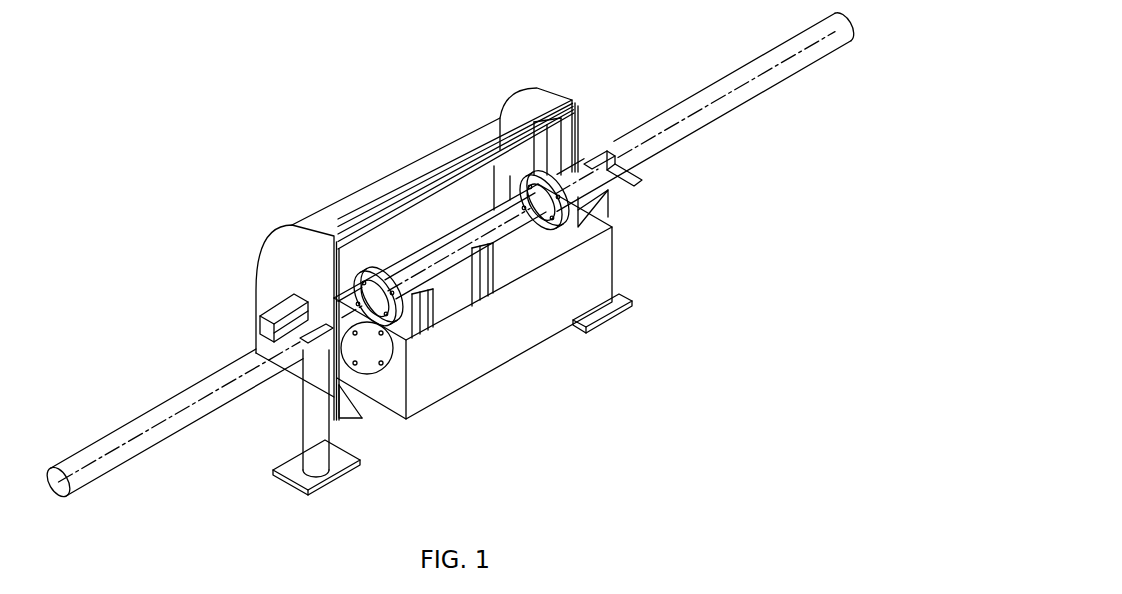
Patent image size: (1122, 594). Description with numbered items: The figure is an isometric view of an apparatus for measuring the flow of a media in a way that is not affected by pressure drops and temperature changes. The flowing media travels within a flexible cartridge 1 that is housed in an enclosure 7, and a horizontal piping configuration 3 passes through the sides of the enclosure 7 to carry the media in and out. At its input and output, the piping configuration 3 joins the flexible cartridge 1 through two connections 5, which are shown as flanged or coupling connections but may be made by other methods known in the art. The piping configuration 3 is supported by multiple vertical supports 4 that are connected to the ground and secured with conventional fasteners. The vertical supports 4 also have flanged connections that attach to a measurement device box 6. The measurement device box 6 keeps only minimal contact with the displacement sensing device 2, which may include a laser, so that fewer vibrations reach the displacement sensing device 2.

The flexible cartridge 1 is at (497, 223).
The displacement sensing device 2 is at (482, 262).
The piping configuration 3 is at (182, 400).
The vertical supports 4 is at (601, 156).
The connections 5 is at (535, 195).
The measurement device box 6 is at (595, 270).
The enclosure 7 is at (333, 208).